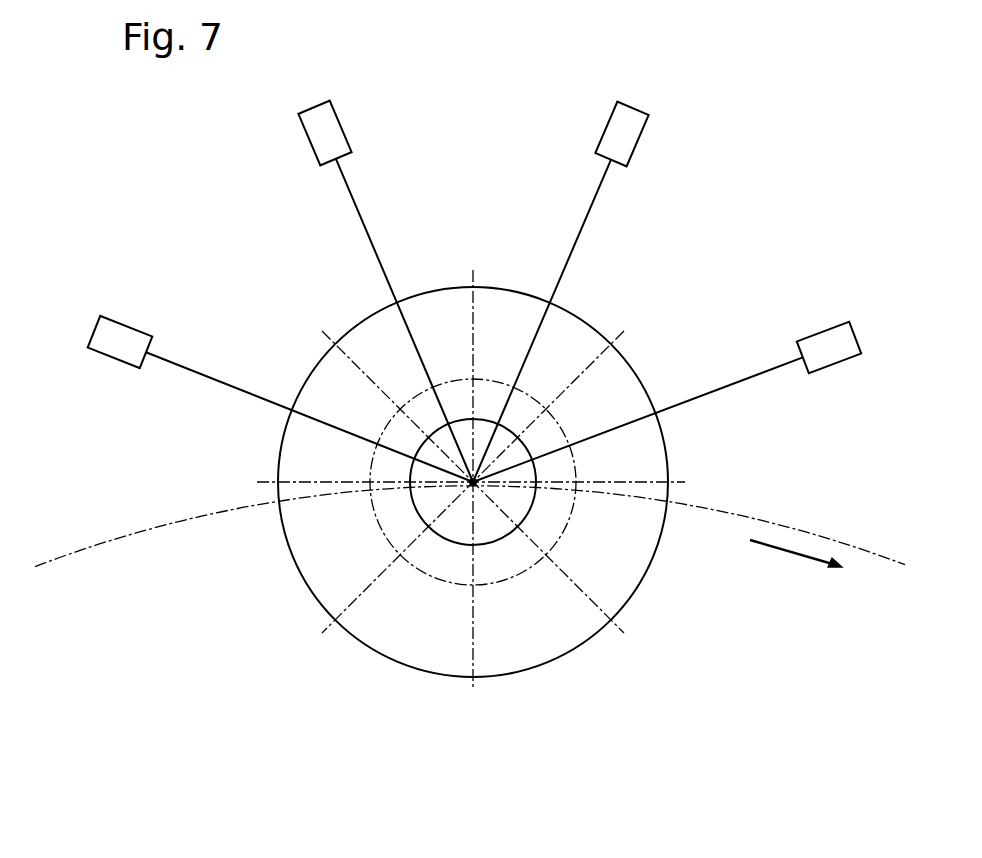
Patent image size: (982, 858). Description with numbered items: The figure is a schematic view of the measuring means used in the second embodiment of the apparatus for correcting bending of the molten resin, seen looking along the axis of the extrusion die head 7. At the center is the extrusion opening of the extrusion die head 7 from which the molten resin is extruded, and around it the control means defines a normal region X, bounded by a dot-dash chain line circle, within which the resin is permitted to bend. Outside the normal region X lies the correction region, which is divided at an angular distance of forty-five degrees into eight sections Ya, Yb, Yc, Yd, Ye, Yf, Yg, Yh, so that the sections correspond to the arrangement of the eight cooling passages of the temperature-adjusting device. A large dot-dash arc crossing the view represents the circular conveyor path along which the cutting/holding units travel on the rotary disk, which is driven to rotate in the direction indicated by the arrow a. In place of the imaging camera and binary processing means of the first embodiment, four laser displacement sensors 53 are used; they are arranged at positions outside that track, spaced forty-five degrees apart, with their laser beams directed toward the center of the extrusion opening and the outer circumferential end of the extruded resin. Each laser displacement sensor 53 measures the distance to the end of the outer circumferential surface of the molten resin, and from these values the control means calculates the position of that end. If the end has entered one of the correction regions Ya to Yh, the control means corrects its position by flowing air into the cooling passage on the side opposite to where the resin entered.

The extrusion die head 7 is at (470, 483).
The laser displacement sensor 53 is at (330, 127).
The normal region X is at (527, 573).
The correction region Ya is at (645, 533).
The correction region Yb is at (630, 383).
The correction region Yc is at (507, 300).
The correction region Yd is at (372, 333).
The correction region Ye is at (292, 440).
The correction region Yf is at (310, 562).
The correction region Yg is at (400, 645).
The correction region Yh is at (495, 658).
The rotation direction arrow a is at (807, 562).